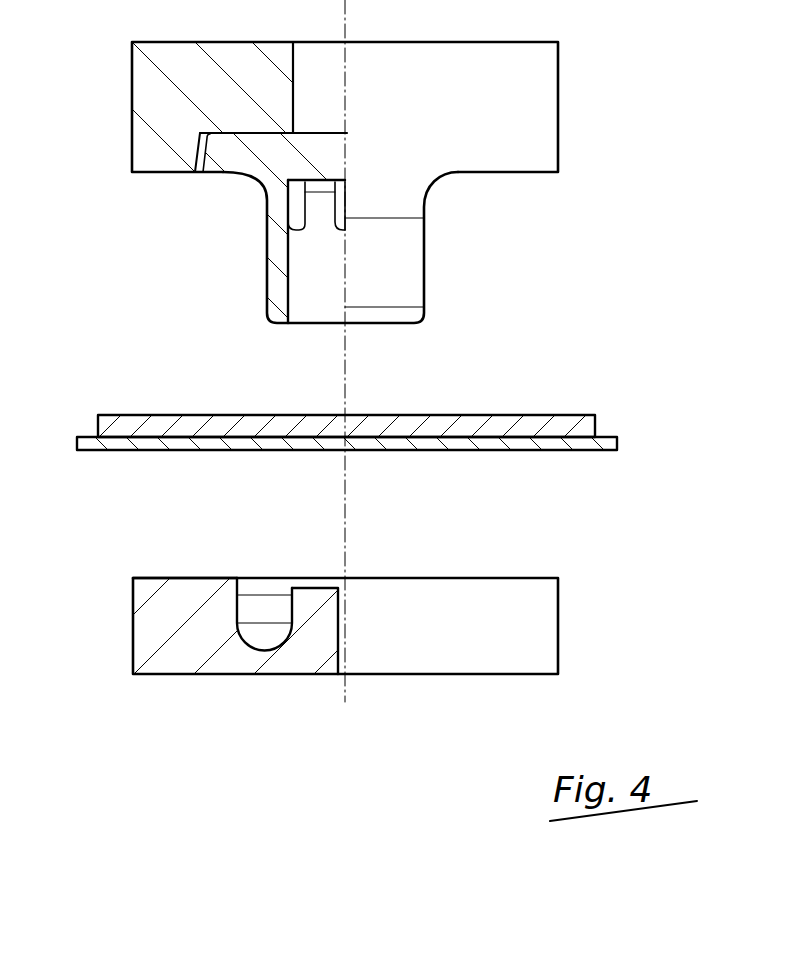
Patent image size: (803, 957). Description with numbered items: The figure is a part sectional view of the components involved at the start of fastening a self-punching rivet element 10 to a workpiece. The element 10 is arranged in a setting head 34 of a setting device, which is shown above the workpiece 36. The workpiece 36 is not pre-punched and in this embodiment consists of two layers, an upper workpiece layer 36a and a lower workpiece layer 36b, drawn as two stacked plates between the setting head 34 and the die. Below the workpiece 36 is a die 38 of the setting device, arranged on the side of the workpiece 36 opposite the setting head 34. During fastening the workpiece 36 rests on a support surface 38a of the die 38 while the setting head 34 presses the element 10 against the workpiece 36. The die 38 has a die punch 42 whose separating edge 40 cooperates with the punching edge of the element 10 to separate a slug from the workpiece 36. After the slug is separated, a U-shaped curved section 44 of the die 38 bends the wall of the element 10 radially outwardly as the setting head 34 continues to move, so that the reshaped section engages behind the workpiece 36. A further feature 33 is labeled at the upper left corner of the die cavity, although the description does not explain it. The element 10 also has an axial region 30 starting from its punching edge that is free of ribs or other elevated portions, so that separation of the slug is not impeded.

The element 10 is at (466, 250).
The region free of elevated portions 30 is at (312, 325).
The cavity edge 33 is at (239, 577).
The setting head 34 is at (560, 104).
The workpiece 36 is at (404, 409).
The upper workpiece layer 36a is at (538, 409).
The lower workpiece layer 36b is at (600, 455).
The die 38 is at (293, 623).
The support surface 38a is at (172, 578).
The separating edge 40 is at (289, 578).
The die punch 42 is at (332, 578).
The U-shaped curved section 44 is at (289, 645).